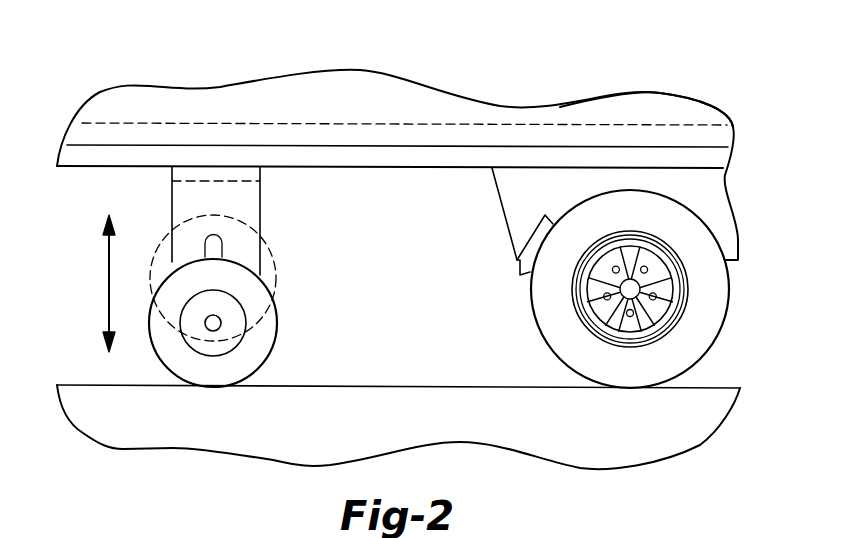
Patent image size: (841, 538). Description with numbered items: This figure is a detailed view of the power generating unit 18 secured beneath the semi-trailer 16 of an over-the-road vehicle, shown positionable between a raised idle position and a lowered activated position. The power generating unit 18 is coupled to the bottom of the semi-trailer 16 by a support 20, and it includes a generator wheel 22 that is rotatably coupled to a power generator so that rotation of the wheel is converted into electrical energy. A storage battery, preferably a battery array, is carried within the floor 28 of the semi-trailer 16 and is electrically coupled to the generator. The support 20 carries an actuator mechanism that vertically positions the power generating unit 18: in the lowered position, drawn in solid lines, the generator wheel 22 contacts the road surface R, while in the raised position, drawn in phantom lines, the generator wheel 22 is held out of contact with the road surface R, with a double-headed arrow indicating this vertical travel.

The semi-trailer 16 is at (183, 76).
The power generating unit 18 is at (328, 281).
The support 20 is at (250, 193).
The generator wheel 22 is at (252, 353).
The floor 28 is at (650, 112).
The road surface R is at (717, 388).